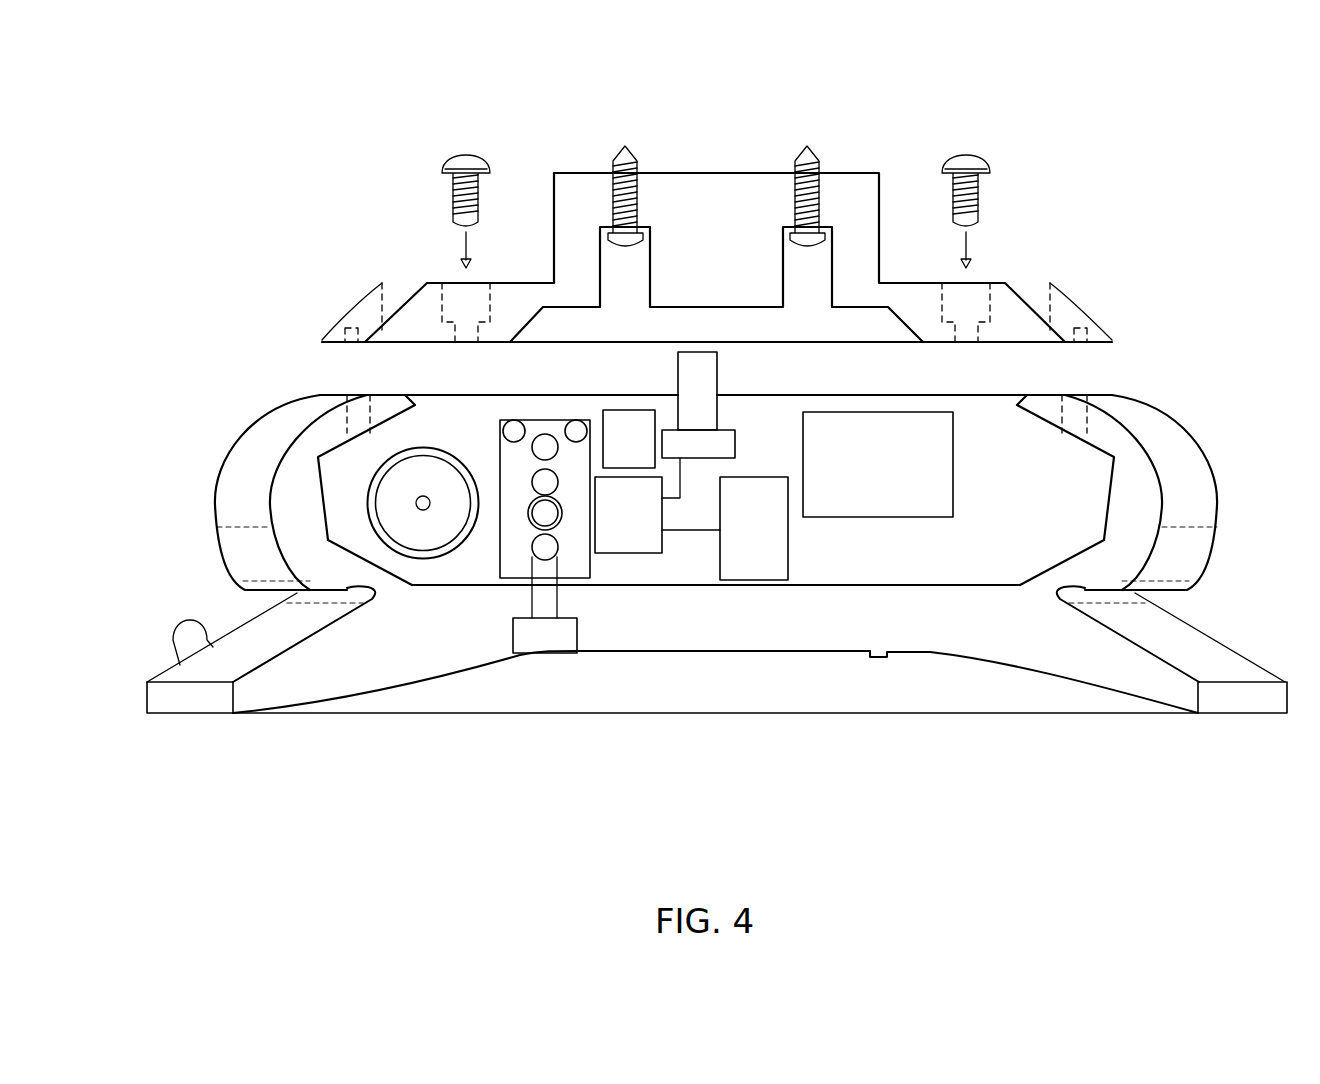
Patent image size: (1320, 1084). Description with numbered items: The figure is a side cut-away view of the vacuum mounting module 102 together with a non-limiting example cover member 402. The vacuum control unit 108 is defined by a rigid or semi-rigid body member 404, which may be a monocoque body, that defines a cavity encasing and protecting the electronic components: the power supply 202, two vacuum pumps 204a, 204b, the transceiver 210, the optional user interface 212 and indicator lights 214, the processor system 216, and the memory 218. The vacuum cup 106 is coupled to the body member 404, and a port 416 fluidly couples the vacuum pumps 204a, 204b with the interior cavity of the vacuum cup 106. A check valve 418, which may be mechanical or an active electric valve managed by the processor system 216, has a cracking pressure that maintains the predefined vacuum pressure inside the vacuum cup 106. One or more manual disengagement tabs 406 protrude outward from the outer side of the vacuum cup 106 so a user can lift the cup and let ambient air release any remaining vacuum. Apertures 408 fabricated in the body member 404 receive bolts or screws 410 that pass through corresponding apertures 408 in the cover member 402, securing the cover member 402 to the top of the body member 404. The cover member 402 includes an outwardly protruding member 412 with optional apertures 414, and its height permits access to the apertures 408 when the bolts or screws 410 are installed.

The vacuum mounting module 102 is at (1171, 148).
The vacuum cup 106 is at (701, 587).
The vacuum control unit 108 is at (1188, 414).
The power supply 202 is at (897, 475).
The vacuum pump 204a is at (545, 420).
The vacuum pump 204b is at (425, 540).
The transceiver 210 is at (648, 451).
The user interface 212 is at (717, 372).
The indicator lights 214 is at (698, 444).
The processor system 216 is at (647, 527).
The memory 218 is at (773, 541).
The cover member 402 is at (714, 248).
The body member 404 is at (222, 488).
The manual disengagement tab 406 is at (184, 625).
The apertures 408 is at (466, 290).
The bolts or screws 410 is at (465, 157).
The outwardly protruding member 412 is at (560, 157).
The apertures 414 is at (625, 296).
The port 416 is at (558, 600).
The check valve 418 is at (548, 640).